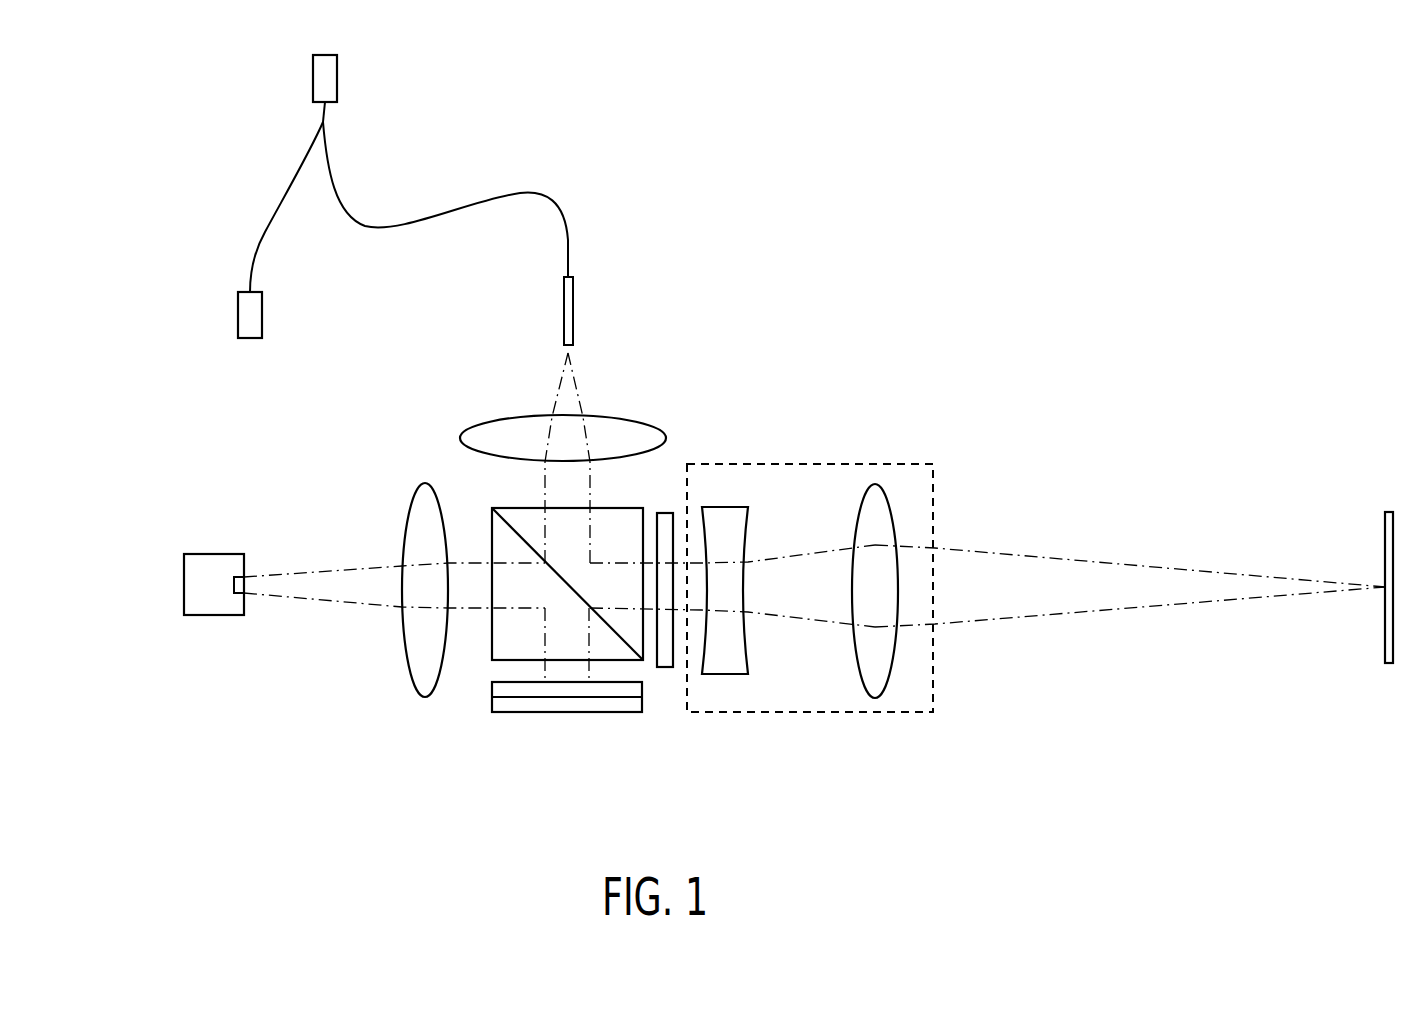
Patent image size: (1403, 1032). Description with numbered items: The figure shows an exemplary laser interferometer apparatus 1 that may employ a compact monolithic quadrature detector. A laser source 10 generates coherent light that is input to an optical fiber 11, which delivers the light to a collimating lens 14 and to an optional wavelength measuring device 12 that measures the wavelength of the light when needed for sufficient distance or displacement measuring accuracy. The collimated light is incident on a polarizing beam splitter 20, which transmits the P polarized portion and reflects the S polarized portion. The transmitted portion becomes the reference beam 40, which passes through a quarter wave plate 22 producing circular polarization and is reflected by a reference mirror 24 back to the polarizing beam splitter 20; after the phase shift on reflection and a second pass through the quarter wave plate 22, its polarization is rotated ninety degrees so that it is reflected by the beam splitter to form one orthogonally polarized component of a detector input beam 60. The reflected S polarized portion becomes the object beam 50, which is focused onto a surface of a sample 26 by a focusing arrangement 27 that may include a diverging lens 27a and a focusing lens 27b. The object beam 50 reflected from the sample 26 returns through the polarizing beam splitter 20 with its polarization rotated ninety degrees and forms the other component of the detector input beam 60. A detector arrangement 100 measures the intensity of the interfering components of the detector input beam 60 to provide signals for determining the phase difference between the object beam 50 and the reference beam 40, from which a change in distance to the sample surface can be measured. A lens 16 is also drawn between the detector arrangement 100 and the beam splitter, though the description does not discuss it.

The laser interferometer apparatus 1 is at (832, 207).
The laser source 10 is at (368, 67).
The optical fiber 11 is at (411, 223).
The wavelength measuring device 12 is at (204, 314).
The collimating lens 14 is at (581, 423).
The lens 16 is at (383, 583).
The polarizing beam splitter 20 is at (515, 534).
The quarter wave plate 22 is at (665, 636).
The reference mirror 24 is at (567, 738).
The sample 26 is at (1360, 557).
The focusing arrangement 27 is at (841, 620).
The diverging lens 27a is at (773, 524).
The focusing lens 27b is at (913, 556).
The reference beam 40 is at (471, 679).
The object beam 50 is at (1130, 556).
The detector input beam 60 is at (385, 621).
The detector arrangement 100 is at (175, 563).